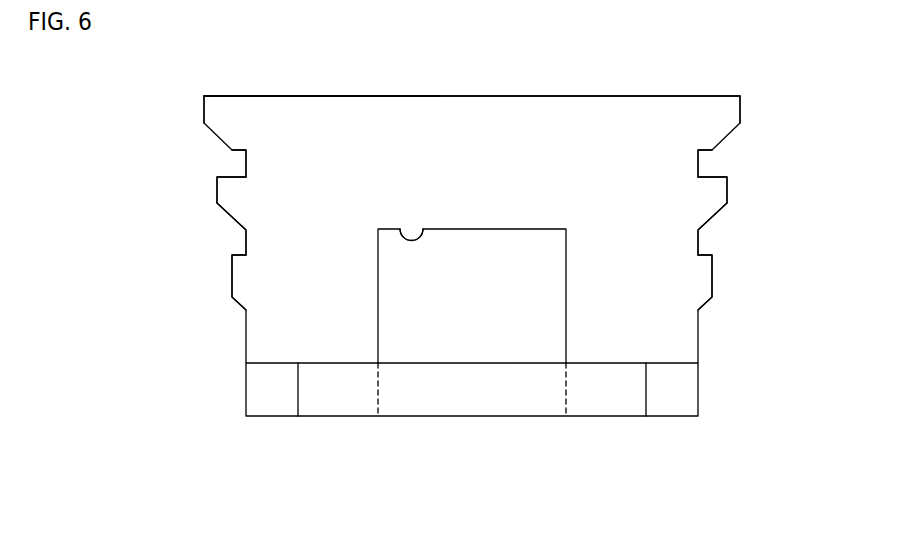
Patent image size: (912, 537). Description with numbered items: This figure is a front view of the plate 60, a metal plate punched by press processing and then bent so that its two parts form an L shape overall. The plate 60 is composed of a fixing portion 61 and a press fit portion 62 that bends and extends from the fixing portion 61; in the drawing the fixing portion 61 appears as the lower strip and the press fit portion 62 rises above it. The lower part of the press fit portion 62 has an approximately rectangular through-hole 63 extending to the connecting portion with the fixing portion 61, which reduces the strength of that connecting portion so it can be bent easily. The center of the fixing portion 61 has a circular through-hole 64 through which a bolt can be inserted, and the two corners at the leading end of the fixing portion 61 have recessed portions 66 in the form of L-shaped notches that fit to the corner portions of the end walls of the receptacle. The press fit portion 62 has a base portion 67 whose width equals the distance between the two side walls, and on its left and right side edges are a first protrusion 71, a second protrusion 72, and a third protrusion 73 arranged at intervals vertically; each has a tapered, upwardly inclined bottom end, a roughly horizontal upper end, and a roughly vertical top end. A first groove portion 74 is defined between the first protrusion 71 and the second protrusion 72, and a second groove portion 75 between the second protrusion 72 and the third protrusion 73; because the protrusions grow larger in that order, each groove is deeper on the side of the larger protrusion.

The plate 60 is at (480, 96).
The fixing portion 61 is at (469, 402).
The press fit portion 62 is at (547, 102).
The through-hole 63 is at (423, 229).
The circular through-hole 64 is at (563, 393).
The recessed portions 66 is at (298, 392).
The base portion 67 is at (360, 122).
The first protrusion 71 is at (233, 275).
The second protrusion 72 is at (225, 197).
The third protrusion 73 is at (215, 113).
The first groove portion 74 is at (245, 243).
The second groove portion 75 is at (243, 162).